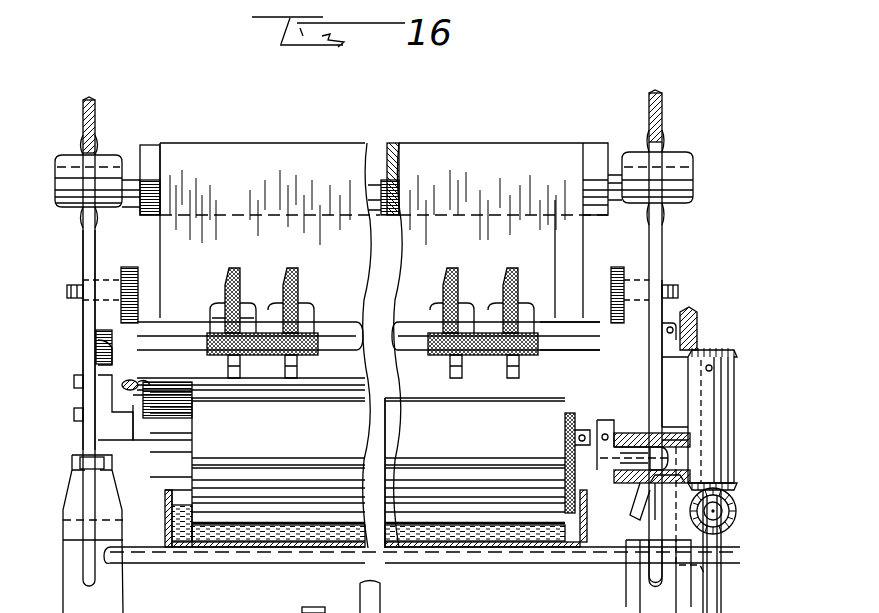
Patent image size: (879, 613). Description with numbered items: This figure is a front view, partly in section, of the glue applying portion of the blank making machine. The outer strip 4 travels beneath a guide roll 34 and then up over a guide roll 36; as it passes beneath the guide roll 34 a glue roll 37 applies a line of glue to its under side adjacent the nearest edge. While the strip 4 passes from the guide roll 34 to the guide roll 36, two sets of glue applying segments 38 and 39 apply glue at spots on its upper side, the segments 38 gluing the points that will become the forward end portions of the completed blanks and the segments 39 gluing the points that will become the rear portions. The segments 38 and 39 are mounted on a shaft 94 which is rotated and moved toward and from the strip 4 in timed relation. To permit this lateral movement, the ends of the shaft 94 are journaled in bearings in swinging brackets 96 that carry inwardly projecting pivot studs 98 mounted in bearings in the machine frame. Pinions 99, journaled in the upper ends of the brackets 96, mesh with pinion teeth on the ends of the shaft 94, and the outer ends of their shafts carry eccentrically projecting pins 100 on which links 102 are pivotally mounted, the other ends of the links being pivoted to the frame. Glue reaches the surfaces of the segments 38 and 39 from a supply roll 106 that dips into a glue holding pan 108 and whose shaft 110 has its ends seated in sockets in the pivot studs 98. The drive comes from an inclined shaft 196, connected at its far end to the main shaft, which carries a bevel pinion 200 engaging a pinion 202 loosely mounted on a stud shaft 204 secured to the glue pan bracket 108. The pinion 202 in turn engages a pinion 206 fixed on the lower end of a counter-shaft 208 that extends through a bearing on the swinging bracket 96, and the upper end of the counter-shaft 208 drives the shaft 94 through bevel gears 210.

The strip 4 is at (560, 242).
The guide roll 34 is at (122, 386).
The guide roll 36 is at (595, 148).
The glue roll 37 is at (572, 505).
The glue applying segments 38 is at (300, 306).
The glue applying segments 39 is at (300, 370).
The shaft 94 is at (560, 324).
The brackets 96 is at (84, 361).
The pivot studs 98 is at (650, 480).
The pinions 99 is at (129, 262).
The eccentric pins 100 is at (67, 292).
The links 102 is at (83, 282).
The supply roll 106 is at (470, 487).
The glue holding pan 108 is at (576, 530).
The shaft 110 is at (614, 472).
The inclined shaft 196 is at (724, 599).
The bevel pinion 200 is at (737, 513).
The pinion 202 is at (718, 553).
The stud shaft 204 is at (722, 577).
The pinion 206 is at (732, 489).
The counter-shaft 208 is at (722, 440).
The bevel gears 210 is at (696, 345).